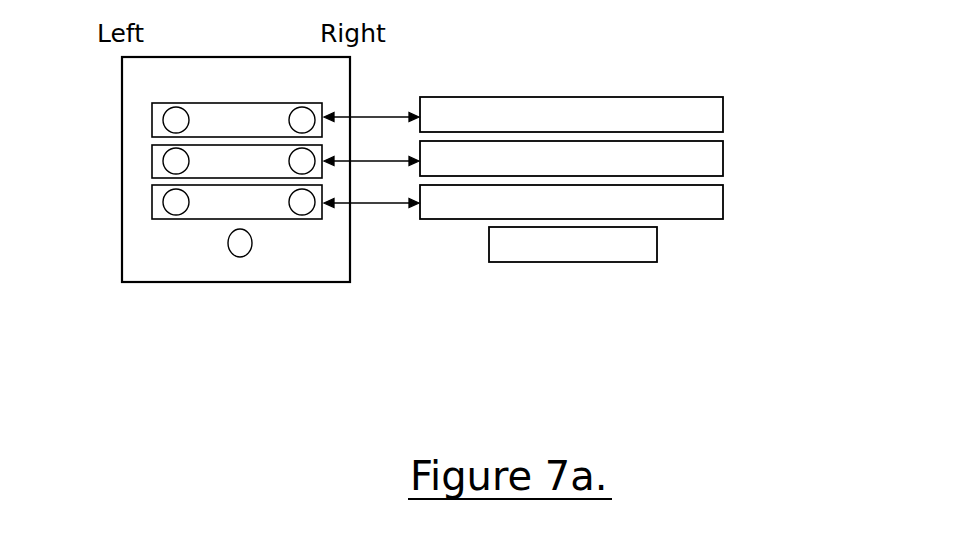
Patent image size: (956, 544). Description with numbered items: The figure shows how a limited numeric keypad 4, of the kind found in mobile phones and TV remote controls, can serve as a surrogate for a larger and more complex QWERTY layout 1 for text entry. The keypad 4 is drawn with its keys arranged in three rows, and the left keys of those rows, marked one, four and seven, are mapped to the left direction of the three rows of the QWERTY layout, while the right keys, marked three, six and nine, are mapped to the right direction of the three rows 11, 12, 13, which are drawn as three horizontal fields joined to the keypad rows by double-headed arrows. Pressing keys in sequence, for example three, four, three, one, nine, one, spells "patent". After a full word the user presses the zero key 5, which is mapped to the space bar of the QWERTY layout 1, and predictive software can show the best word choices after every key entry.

The QWERTY layout 1 is at (584, 262).
The numeric keypad 4 is at (331, 283).
The zero key 5 is at (233, 257).
The top row of the QWERTY layout 11 is at (723, 113).
The middle row of the QWERTY layout 12 is at (723, 159).
The bottom row of the QWERTY layout 13 is at (723, 212).